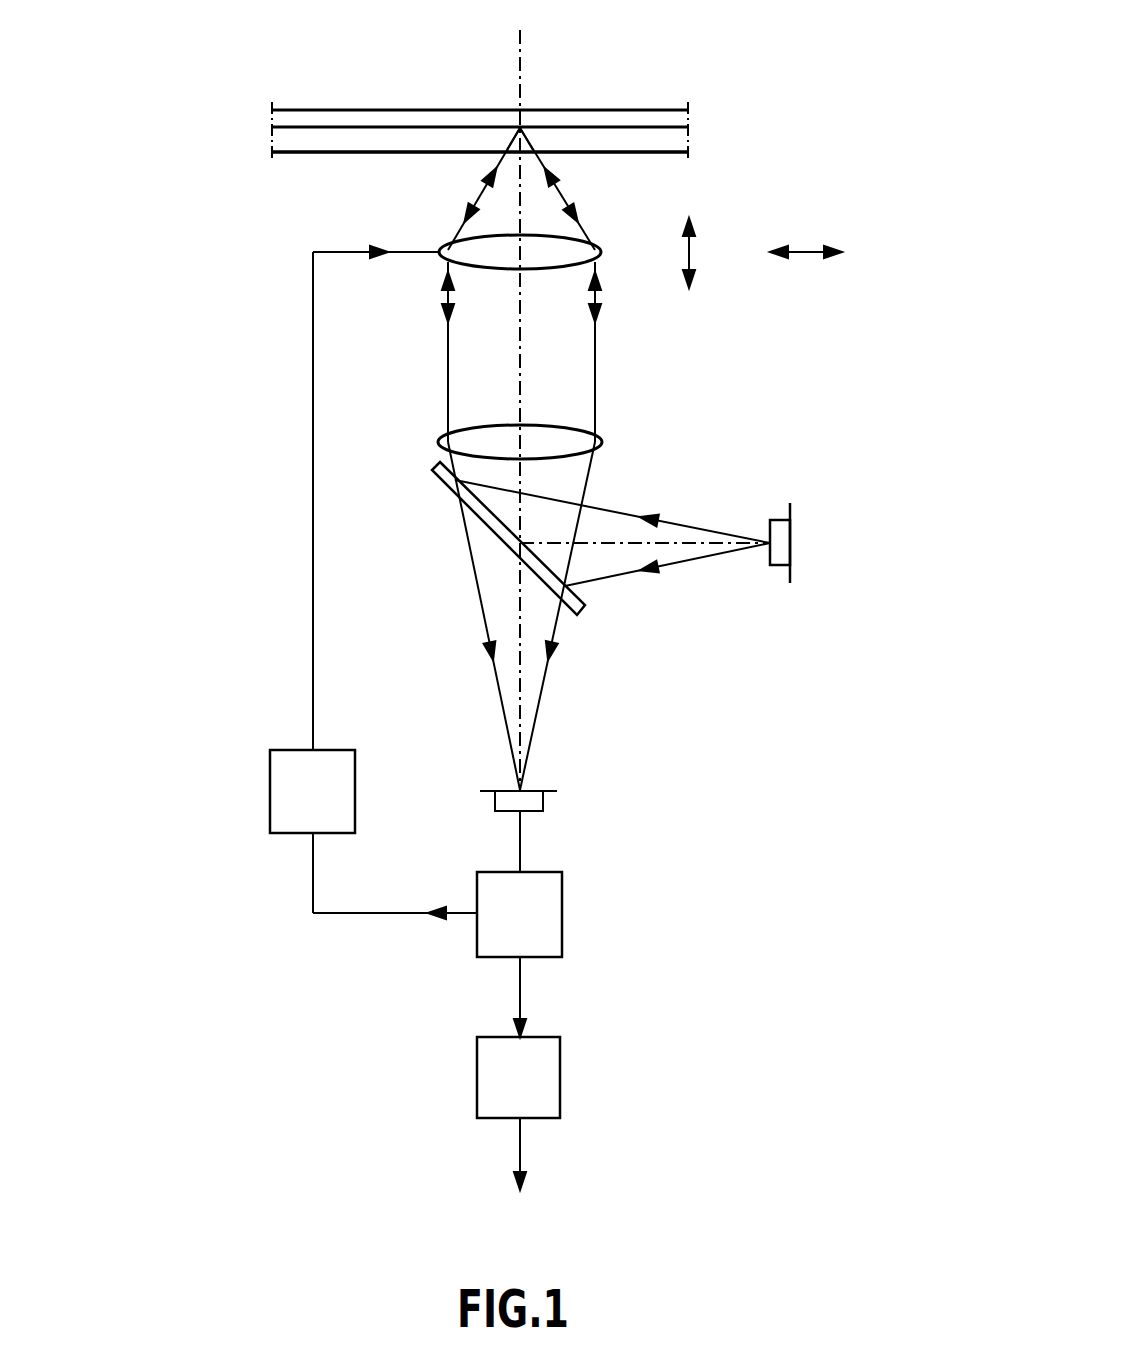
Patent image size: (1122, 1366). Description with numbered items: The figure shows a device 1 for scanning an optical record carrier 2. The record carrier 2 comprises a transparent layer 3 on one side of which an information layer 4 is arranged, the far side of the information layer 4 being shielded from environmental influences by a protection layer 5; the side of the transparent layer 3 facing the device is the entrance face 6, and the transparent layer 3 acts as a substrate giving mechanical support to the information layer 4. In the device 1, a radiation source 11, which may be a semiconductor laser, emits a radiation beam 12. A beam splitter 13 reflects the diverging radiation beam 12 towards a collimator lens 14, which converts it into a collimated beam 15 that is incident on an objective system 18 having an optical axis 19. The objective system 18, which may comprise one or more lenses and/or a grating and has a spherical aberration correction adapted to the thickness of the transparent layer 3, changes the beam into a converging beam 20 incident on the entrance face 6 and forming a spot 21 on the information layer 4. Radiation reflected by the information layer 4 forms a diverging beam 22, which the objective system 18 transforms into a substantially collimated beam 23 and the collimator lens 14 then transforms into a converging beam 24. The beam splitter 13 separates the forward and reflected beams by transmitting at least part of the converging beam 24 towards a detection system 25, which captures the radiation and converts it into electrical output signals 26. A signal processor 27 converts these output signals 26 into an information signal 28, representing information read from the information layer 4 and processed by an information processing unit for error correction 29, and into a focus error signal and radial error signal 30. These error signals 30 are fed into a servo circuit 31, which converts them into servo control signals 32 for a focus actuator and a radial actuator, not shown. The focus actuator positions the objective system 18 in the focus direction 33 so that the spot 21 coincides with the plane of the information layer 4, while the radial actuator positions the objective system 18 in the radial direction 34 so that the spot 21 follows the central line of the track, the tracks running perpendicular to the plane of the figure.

The scanning device 1 is at (186, 500).
The optical record carrier 2 is at (186, 32).
The transparent layer 3 is at (278, 140).
The information layer 4 is at (313, 127).
The protection layer 5 is at (278, 118).
The entrance face 6 is at (313, 153).
The radiation source 11 is at (792, 555).
The radiation beam 12 is at (690, 525).
The beam splitter 13 is at (445, 478).
The collimator lens 14 is at (465, 440).
The collimated beam 15 is at (447, 366).
The objective system 18 is at (460, 250).
The optical axis 19 is at (522, 43).
The converging beam 20 is at (492, 172).
The spot 21 is at (520, 125).
The diverging beam 22 is at (580, 218).
The substantially collimated beam 23 is at (600, 325).
The converging beam 24 is at (598, 470).
The detection system 25 is at (545, 800).
The electrical output signals 26 is at (522, 840).
The signal processor 27 is at (562, 915).
The information signal 28 is at (522, 997).
The information processing unit for error correction 29 is at (560, 1078).
The focus error signal and radial error signal 30 is at (395, 913).
The servo circuit 31 is at (270, 790).
The servo control signals 32 is at (313, 582).
The focus direction 33 is at (700, 250).
The radial direction 34 is at (800, 252).